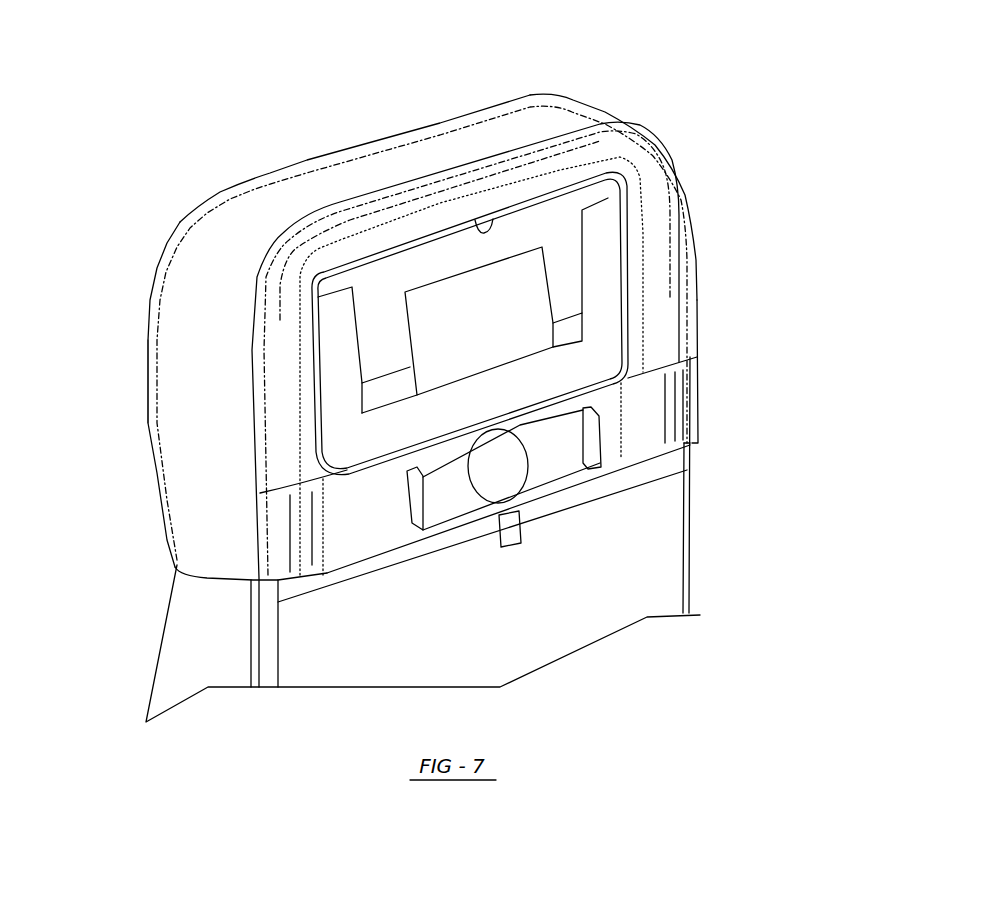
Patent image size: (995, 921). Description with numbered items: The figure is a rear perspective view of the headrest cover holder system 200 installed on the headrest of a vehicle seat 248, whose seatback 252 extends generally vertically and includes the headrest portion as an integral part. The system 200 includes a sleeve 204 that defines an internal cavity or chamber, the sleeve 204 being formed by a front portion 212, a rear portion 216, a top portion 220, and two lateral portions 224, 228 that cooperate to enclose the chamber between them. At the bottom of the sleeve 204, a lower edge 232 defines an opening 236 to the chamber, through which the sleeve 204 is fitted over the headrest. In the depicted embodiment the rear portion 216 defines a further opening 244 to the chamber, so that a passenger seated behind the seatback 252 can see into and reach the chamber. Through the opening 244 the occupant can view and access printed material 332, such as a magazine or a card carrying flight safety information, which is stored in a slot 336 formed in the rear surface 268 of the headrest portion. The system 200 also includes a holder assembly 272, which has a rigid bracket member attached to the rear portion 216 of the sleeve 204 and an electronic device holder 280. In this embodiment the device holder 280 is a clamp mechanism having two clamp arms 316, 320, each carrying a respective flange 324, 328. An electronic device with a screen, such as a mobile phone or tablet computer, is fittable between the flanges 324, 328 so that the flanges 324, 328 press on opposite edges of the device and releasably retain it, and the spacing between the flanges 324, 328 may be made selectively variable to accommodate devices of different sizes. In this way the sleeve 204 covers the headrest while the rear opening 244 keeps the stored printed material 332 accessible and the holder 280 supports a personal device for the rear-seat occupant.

The headrest cover holder system 200 is at (613, 88).
The sleeve 204 is at (175, 228).
The front portion 212 is at (148, 358).
The rear portion 216 is at (657, 268).
The top portion 220 is at (400, 152).
The lateral portion 224 is at (177, 420).
The lateral portion 228 is at (685, 197).
The lower edge 232 is at (210, 578).
The opening 236 is at (218, 593).
The opening 244 is at (475, 218).
The vehicle seat 248 is at (697, 515).
The seatback 252 is at (697, 477).
The rear surface 268 is at (378, 290).
The holder assembly 272 is at (535, 514).
The electronic device holder 280 is at (443, 505).
The clamp arm 316 is at (560, 465).
The clamp arm 320 is at (455, 500).
The flange 324 is at (592, 440).
The flange 328 is at (415, 515).
The printed material 332 is at (518, 290).
The slot 336 is at (388, 386).